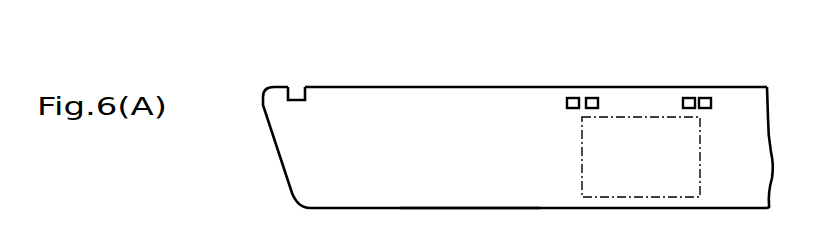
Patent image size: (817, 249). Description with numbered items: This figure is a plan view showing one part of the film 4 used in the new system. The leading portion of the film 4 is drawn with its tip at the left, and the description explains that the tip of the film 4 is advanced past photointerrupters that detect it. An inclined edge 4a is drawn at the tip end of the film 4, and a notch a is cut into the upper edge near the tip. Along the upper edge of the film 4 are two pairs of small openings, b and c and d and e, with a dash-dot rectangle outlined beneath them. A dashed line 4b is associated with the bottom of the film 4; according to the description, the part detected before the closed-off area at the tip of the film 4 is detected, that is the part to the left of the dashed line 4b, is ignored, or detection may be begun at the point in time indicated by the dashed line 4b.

The film 4 is at (443, 100).
The inclined side edge of plate 4a is at (294, 167).
The dashed line 4b is at (470, 228).
The notch a is at (297, 81).
The detection hole b is at (570, 85).
The detection hole c is at (592, 85).
The detection hole d is at (686, 85).
The detection hole e is at (706, 85).